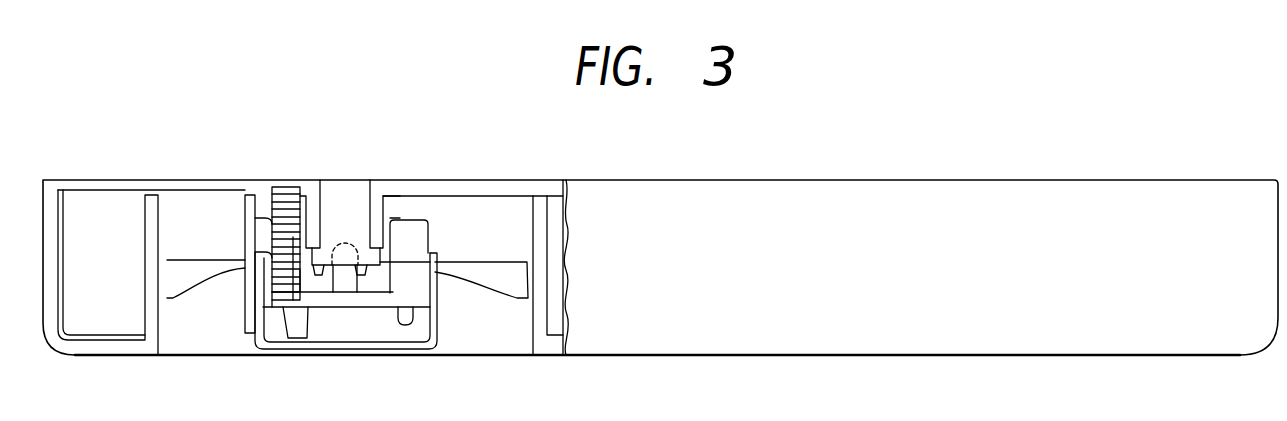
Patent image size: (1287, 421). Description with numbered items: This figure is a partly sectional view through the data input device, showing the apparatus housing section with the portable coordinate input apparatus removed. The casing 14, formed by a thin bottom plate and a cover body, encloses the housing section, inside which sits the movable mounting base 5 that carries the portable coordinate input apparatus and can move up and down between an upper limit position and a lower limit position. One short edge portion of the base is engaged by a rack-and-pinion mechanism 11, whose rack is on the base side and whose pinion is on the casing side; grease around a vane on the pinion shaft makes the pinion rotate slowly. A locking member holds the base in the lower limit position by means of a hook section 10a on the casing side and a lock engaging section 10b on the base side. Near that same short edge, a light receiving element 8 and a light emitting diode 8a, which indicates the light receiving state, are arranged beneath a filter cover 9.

The casing 14 is at (222, 185).
The rack-and-pinion mechanism 11 is at (286, 178).
The lock engaging section 10b is at (350, 272).
The hook section 10a is at (380, 275).
The movable mounting base 5 is at (497, 265).
The light receiving element 8 is at (300, 327).
The light emitting diode 8a is at (405, 325).
The filter cover 9 is at (437, 348).